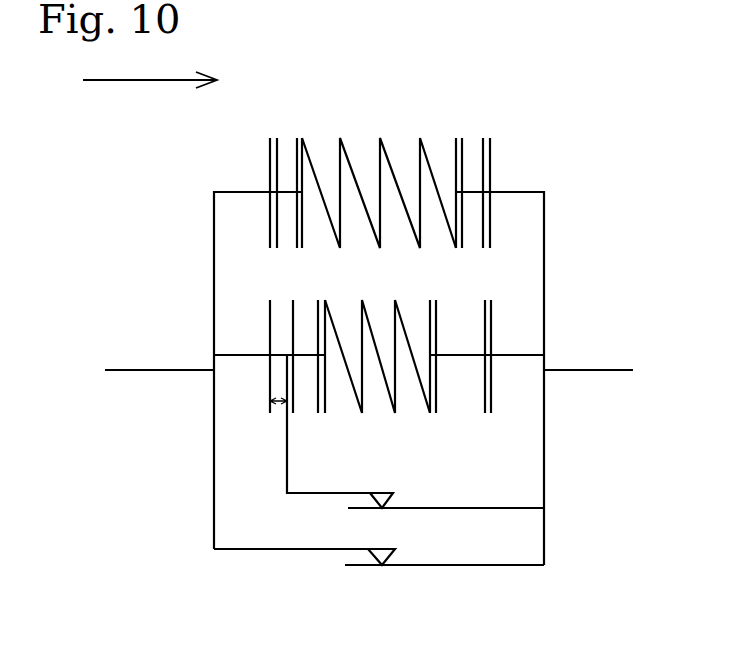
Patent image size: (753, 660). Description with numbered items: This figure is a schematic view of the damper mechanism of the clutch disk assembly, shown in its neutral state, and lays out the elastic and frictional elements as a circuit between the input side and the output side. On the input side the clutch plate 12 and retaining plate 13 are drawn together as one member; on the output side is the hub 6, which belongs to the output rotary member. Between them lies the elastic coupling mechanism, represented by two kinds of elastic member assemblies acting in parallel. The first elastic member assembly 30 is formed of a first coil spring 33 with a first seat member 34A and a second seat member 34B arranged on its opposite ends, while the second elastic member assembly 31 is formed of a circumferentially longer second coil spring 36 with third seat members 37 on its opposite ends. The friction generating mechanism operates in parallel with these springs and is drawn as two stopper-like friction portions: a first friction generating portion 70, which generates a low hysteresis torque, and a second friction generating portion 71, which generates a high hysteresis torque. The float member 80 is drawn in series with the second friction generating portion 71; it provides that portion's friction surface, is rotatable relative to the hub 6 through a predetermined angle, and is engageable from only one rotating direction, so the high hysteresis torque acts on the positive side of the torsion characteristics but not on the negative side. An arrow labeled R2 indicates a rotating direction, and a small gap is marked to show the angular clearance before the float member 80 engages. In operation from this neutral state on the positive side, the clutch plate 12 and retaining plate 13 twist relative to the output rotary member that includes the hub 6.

The hub 6 is at (150, 370).
The clutch plate 12 is at (604, 330).
The retaining plate 13 is at (600, 370).
The first elastic member assembly 30 is at (370, 336).
The second elastic member assembly 31 is at (393, 158).
The first coil spring 33 is at (333, 328).
The first seat member 34A is at (258, 338).
The second seat member 34B is at (436, 335).
The second coil spring 36 is at (352, 167).
The third seat members 37 is at (294, 160).
The first friction generating portion 70 is at (387, 575).
The second friction generating portion 71 is at (407, 493).
The float member 80 is at (323, 493).
The rotation direction R2 is at (150, 96).